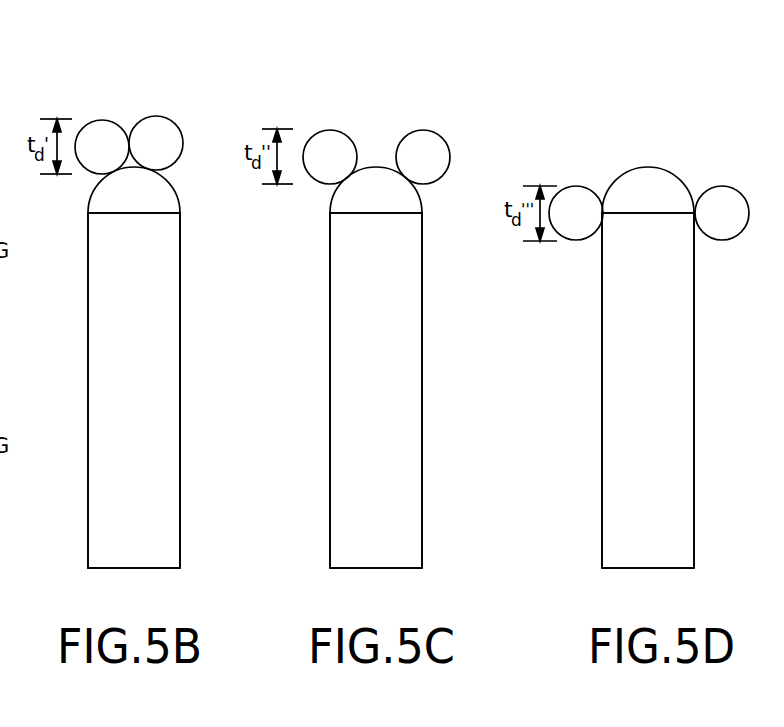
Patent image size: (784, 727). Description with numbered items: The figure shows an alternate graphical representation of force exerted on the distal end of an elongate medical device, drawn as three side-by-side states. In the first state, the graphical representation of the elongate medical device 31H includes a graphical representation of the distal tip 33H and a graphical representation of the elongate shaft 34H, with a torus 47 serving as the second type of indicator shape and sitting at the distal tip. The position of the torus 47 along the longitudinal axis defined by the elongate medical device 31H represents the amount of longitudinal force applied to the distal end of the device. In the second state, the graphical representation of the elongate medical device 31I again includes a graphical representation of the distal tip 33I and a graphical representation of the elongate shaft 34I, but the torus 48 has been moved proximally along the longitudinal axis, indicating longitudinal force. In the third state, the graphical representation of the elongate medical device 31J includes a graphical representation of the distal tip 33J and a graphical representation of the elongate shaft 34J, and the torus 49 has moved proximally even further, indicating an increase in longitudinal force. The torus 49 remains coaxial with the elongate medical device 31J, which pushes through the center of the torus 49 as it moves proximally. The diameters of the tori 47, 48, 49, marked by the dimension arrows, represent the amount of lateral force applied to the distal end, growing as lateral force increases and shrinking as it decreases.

In FIG. 5B, the graphical representation of the elongate medical device 31H is at (50, 289).
In FIG. 5B, the graphical representation of the distal tip 33H is at (158, 193).
In FIG. 5B, the graphical representation of the elongate shaft 34H is at (165, 373).
In FIG. 5B, the torus 47 is at (153, 128).
In FIG. 5C, the graphical representation of the elongate medical device 31I is at (298, 288).
In FIG. 5C, the graphical representation of the distal tip 33I is at (407, 195).
In FIG. 5C, the graphical representation of the elongate shaft 34I is at (407, 373).
In FIG. 5C, the torus 48 is at (417, 145).
In FIG. 5D, the graphical representation of the elongate medical device 31J is at (575, 292).
In FIG. 5D, the graphical representation of the distal tip 33J is at (678, 202).
In FIG. 5D, the graphical representation of the elongate shaft 34J is at (677, 410).
In FIG. 5D, the torus 49 is at (718, 200).